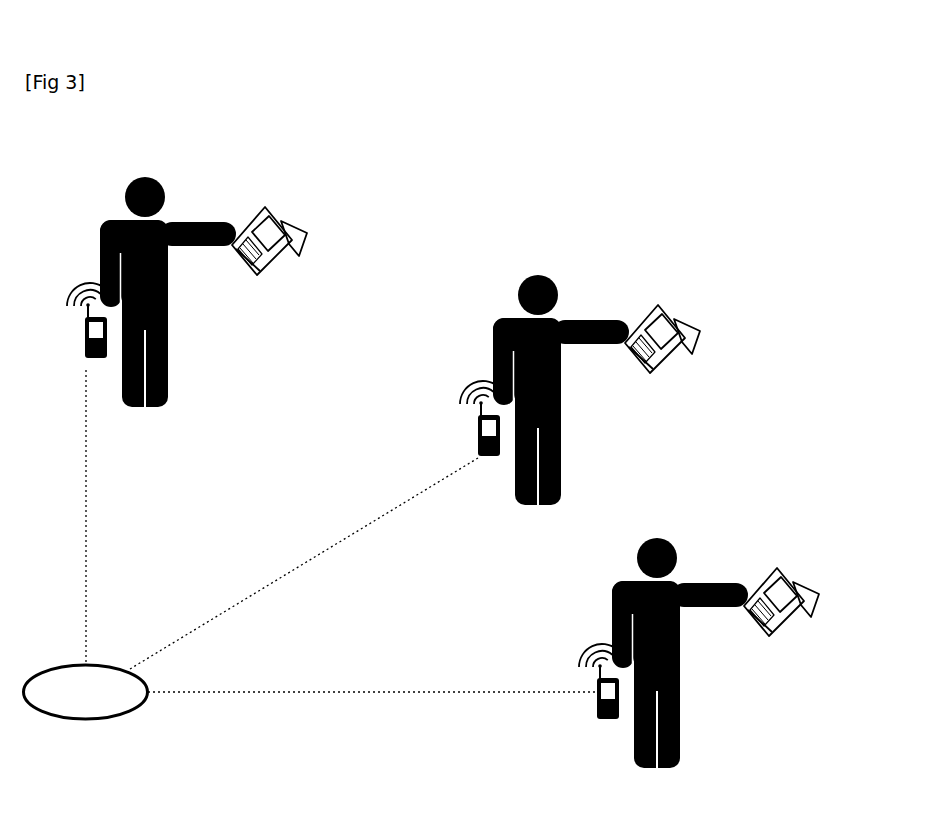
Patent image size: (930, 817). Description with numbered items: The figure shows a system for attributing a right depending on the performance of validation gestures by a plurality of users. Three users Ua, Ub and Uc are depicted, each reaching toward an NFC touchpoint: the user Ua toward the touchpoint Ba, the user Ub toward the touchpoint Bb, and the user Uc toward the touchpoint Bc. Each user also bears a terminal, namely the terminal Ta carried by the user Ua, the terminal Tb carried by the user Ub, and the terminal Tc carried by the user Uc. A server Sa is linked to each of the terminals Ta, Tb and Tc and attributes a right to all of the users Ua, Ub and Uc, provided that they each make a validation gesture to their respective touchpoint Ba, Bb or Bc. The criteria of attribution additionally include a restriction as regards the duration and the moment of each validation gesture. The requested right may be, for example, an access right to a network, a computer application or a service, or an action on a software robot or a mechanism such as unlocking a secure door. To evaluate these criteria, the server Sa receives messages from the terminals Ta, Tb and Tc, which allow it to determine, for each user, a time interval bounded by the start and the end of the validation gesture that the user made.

The server Sa is at (86, 692).
The user Ua is at (161, 292).
The terminal Ta is at (76, 325).
The NFC touchpoint Ba is at (270, 247).
The user Ub is at (554, 390).
The terminal Tb is at (469, 424).
The NFC touchpoint Bb is at (663, 345).
The user Uc is at (674, 653).
The terminal Tc is at (588, 686).
The NFC touchpoint Bc is at (783, 608).